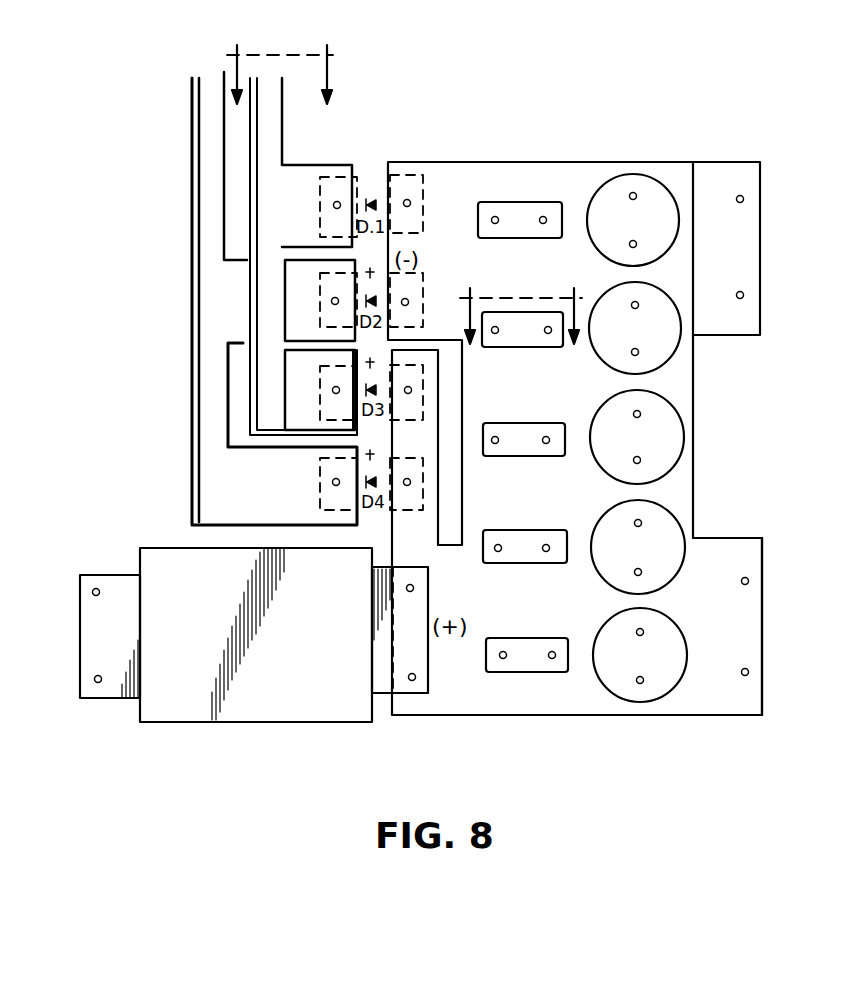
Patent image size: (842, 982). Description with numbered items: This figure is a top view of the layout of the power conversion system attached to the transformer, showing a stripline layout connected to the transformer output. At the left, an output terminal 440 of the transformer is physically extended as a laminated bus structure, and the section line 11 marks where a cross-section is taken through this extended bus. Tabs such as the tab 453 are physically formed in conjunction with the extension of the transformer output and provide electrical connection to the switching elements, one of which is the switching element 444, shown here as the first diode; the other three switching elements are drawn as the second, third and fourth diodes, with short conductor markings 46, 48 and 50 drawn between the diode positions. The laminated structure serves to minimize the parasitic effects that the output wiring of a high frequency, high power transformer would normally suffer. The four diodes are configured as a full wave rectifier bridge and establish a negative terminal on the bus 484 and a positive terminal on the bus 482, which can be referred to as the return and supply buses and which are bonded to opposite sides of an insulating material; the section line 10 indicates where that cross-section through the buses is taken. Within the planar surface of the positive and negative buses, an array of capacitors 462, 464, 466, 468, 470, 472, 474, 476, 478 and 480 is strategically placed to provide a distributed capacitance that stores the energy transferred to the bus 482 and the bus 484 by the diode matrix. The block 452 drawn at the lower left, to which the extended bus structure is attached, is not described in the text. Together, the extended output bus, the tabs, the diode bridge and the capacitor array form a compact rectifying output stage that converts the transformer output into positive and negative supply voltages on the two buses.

The output terminal 440 is at (207, 108).
The switching element 444 is at (377, 174).
The tab 453 is at (338, 170).
The transformer block 452 is at (197, 708).
The capacitor 462 is at (525, 200).
The capacitor 464 is at (637, 178).
The capacitor 466 is at (523, 326).
The capacitor 468 is at (668, 342).
The capacitor 470 is at (525, 433).
The capacitor 472 is at (676, 430).
The capacitor 474 is at (532, 542).
The capacitor 476 is at (672, 530).
The capacitor 478 is at (531, 648).
The capacitor 480 is at (668, 636).
The positive bus 482 is at (752, 275).
The negative bus 484 is at (752, 597).
The diode lead conductor 46 is at (371, 261).
The diode lead conductor 48 is at (373, 351).
The diode lead conductor 50 is at (373, 443).
The section line 10- 10 is at (527, 332).
The section line 11- 11 is at (285, 86).